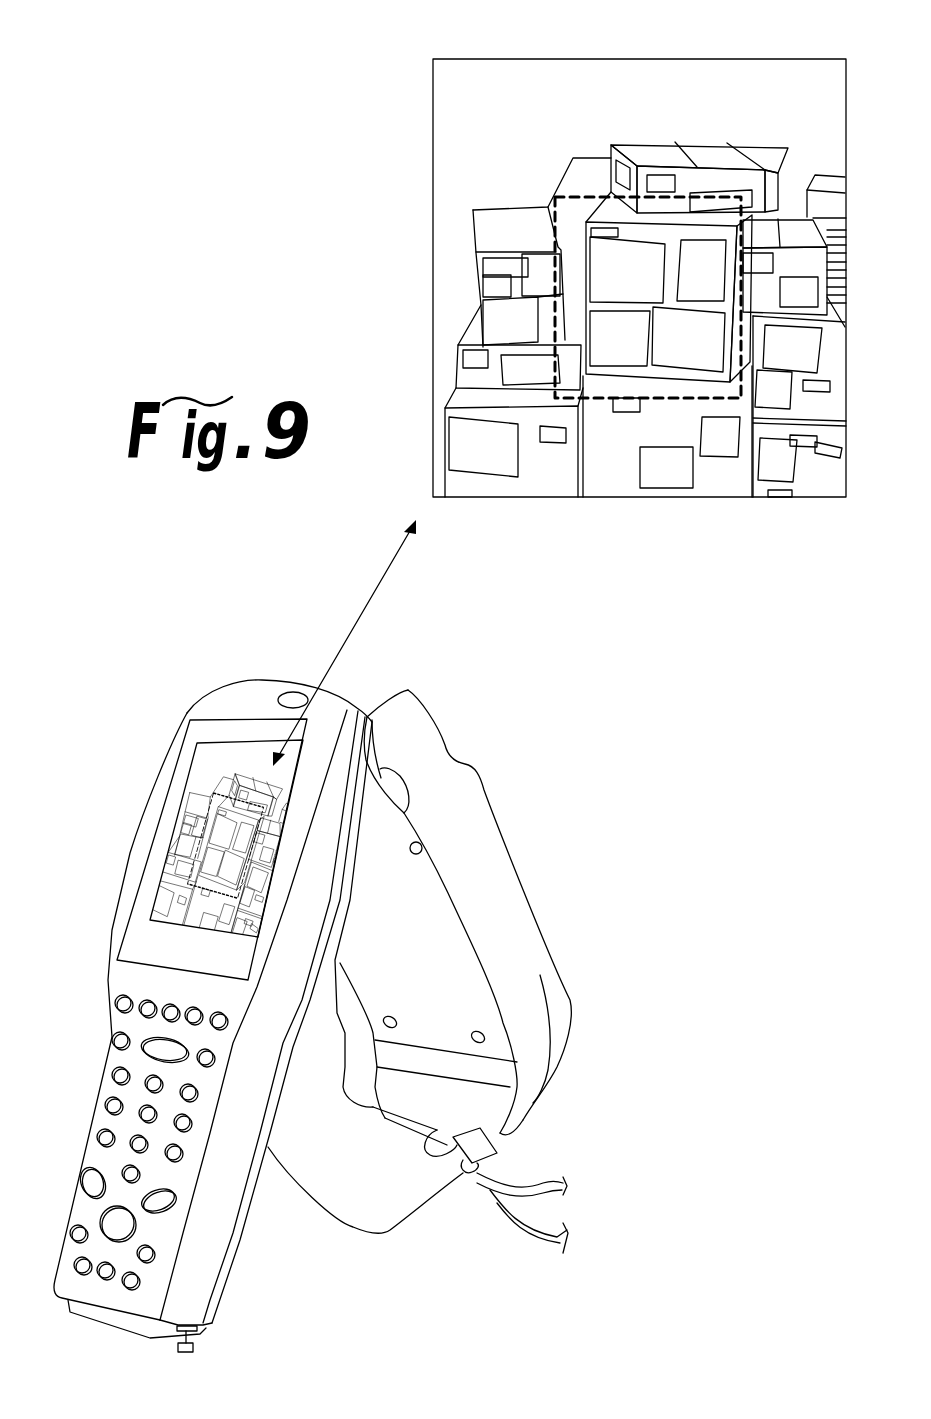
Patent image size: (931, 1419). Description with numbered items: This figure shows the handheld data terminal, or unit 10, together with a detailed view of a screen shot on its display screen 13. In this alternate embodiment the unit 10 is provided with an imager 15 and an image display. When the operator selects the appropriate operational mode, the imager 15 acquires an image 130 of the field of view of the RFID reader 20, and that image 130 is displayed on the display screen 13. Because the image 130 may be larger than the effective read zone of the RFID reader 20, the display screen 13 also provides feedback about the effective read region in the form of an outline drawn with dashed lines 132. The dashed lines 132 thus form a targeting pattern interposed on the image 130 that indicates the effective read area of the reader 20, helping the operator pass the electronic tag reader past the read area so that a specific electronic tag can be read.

The unit 10 is at (130, 712).
The display screen 13 is at (163, 903).
The imager 15 is at (272, 679).
The RFID reader 20 is at (515, 893).
The image 130 is at (428, 288).
The dashed lines 132 is at (722, 198).